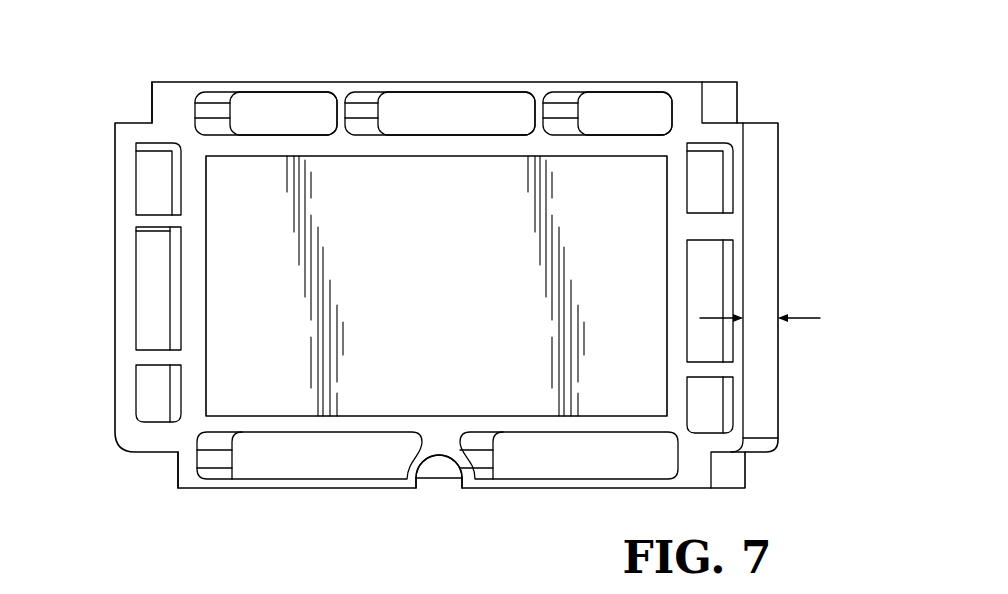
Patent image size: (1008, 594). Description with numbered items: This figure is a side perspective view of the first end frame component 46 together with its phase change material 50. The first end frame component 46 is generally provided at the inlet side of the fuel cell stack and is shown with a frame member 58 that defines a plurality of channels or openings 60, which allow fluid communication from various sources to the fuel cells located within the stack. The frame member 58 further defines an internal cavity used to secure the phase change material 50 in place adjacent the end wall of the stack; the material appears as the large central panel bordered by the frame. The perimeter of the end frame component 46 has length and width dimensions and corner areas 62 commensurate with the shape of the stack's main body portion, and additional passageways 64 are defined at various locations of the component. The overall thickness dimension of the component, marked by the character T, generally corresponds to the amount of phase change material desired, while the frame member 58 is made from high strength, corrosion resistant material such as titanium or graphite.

The first end frame component 46 is at (815, 93).
The phase change material 50 is at (220, 352).
The frame member 58 is at (763, 218).
The channels or openings 60 is at (248, 94).
The corner areas 62 is at (149, 101).
The additional passageways 64 is at (430, 470).